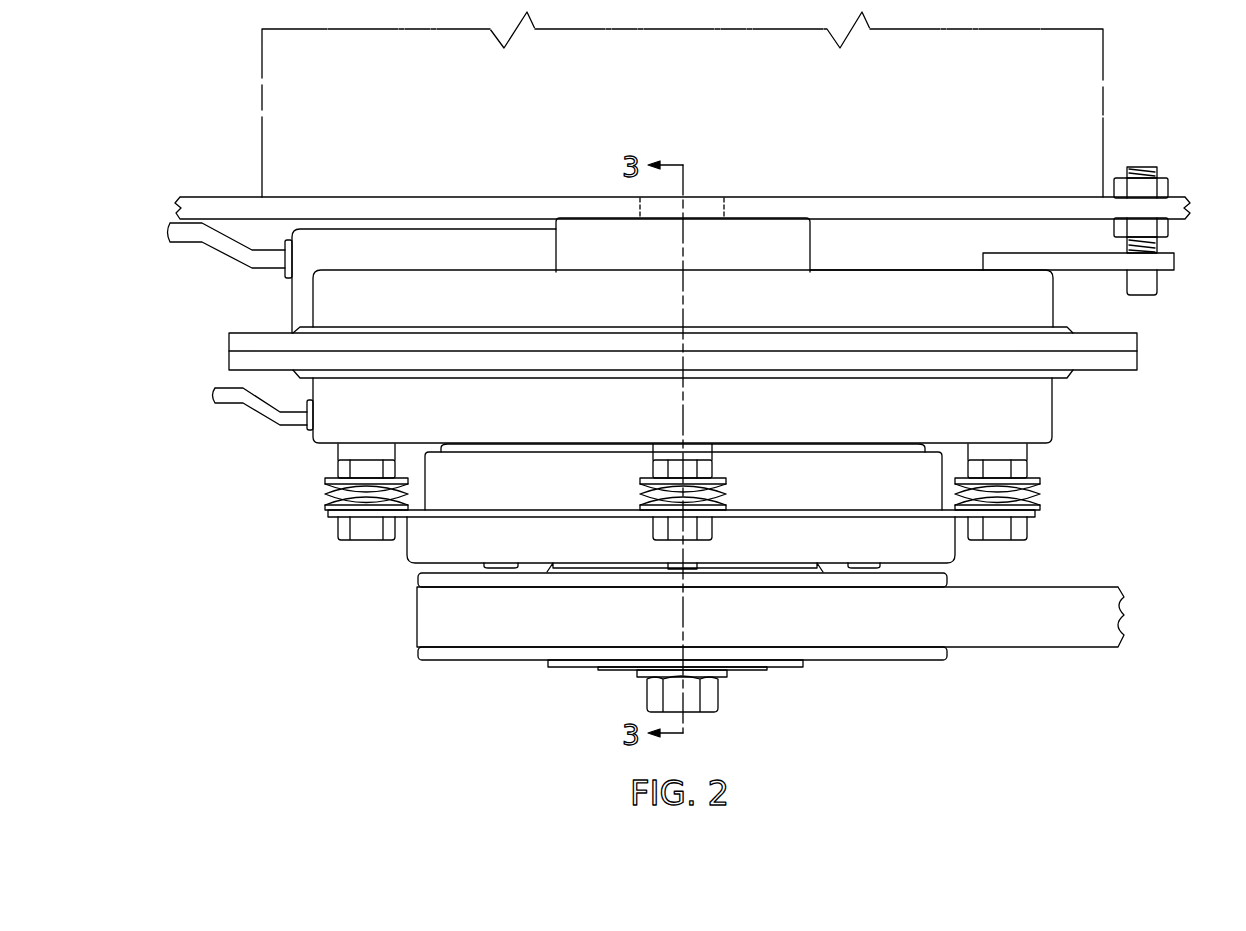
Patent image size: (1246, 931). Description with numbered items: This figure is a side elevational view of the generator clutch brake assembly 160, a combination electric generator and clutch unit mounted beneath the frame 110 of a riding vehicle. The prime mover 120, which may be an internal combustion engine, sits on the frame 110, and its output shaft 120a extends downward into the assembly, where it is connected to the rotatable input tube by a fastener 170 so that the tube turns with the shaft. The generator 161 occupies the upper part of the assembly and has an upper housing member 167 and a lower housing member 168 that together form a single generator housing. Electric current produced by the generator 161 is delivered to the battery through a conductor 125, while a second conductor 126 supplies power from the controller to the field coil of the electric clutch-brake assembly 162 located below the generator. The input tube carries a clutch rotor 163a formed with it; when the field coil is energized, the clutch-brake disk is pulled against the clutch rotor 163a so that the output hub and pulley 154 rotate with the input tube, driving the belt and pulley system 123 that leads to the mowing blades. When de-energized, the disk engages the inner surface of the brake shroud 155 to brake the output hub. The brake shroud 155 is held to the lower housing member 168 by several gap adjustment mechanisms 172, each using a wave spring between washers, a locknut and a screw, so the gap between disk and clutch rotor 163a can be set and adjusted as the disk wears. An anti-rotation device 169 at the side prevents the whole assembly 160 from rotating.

The frame 110 is at (198, 197).
The prime mover 120 is at (262, 51).
The output shaft 120a is at (727, 203).
The belt and pulley system 123 is at (1104, 648).
The conductor 125 is at (257, 269).
The conductor 126 is at (286, 428).
The pulley 154 is at (938, 661).
The brake shroud 155 is at (853, 549).
The generator clutch brake assembly 160 is at (197, 307).
The generator 161 is at (870, 256).
The electric clutch-brake assembly 162 is at (977, 558).
The clutch rotor 163a is at (862, 491).
The upper housing member 167 is at (936, 309).
The lower housing member 168 is at (936, 418).
The anti-rotation device 169 is at (1186, 289).
The fastener 170 is at (720, 694).
The gap adjustment mechanism 172 is at (298, 509).